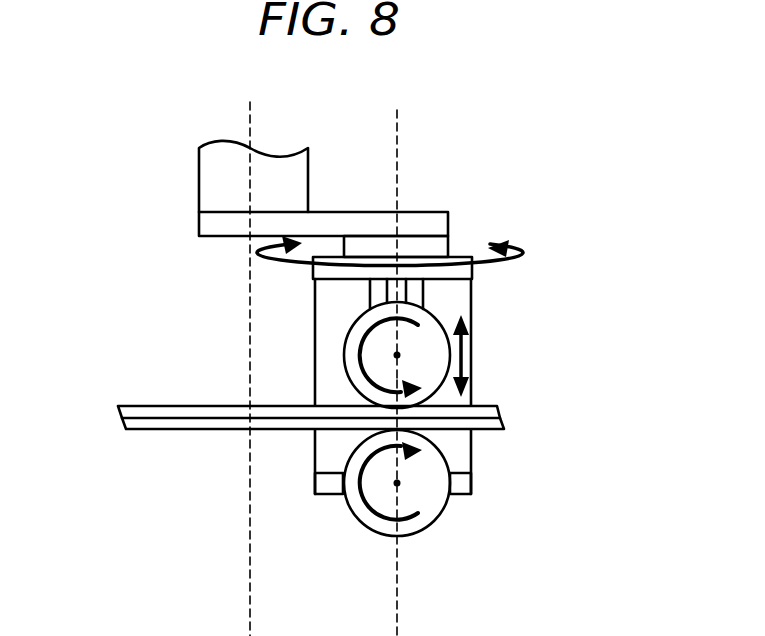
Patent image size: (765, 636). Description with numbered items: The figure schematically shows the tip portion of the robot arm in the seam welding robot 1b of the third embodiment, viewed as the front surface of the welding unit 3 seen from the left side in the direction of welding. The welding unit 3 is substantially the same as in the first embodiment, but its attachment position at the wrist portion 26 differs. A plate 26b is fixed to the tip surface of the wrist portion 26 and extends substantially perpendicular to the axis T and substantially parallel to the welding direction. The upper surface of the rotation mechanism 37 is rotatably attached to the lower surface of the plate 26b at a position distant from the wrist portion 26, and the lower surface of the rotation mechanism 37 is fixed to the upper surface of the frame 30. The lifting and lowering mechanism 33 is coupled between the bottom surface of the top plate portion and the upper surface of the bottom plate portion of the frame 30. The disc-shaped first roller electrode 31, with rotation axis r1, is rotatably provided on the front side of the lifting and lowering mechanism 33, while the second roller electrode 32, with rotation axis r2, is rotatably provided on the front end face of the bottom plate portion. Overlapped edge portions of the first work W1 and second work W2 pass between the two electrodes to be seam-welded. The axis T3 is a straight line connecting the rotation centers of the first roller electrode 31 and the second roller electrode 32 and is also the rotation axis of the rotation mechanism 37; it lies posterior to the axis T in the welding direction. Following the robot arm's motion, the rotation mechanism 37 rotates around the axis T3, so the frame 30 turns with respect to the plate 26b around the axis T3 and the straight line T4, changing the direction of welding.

The seam welding robot 1b is at (133, 104).
The wrist portion 26 is at (213, 172).
The plate 26b is at (437, 223).
The rotation mechanism 37 is at (437, 247).
The welding unit 3 is at (552, 346).
The frame 30 is at (457, 452).
The lifting and lowering mechanism 33 is at (413, 290).
The first roller electrode 31 is at (352, 365).
The second roller electrode 32 is at (363, 515).
The rotation axis r1 is at (397, 355).
The rotation axis r2 is at (397, 483).
The first work W1 is at (130, 412).
The second work W2 is at (130, 424).
The axis T is at (250, 118).
The axis T3 is at (399, 125).
The straight line T4 is at (399, 608).